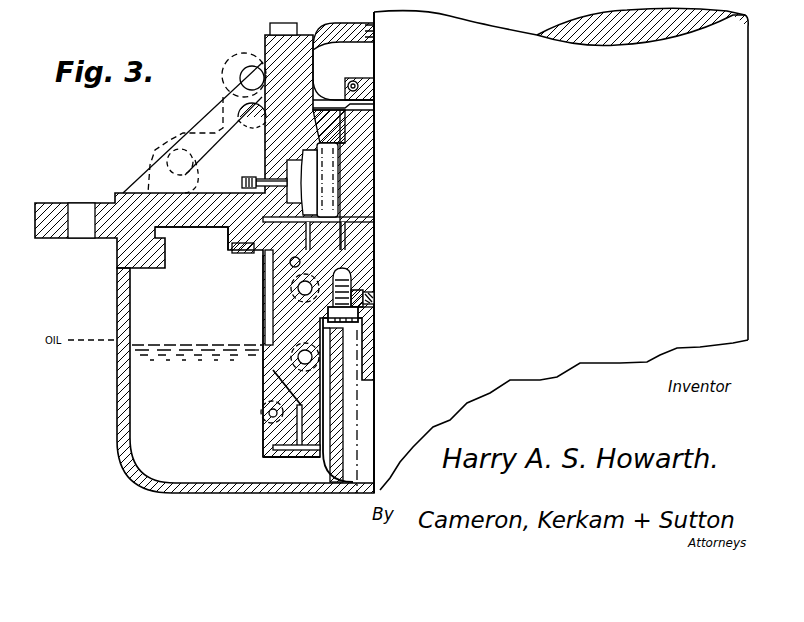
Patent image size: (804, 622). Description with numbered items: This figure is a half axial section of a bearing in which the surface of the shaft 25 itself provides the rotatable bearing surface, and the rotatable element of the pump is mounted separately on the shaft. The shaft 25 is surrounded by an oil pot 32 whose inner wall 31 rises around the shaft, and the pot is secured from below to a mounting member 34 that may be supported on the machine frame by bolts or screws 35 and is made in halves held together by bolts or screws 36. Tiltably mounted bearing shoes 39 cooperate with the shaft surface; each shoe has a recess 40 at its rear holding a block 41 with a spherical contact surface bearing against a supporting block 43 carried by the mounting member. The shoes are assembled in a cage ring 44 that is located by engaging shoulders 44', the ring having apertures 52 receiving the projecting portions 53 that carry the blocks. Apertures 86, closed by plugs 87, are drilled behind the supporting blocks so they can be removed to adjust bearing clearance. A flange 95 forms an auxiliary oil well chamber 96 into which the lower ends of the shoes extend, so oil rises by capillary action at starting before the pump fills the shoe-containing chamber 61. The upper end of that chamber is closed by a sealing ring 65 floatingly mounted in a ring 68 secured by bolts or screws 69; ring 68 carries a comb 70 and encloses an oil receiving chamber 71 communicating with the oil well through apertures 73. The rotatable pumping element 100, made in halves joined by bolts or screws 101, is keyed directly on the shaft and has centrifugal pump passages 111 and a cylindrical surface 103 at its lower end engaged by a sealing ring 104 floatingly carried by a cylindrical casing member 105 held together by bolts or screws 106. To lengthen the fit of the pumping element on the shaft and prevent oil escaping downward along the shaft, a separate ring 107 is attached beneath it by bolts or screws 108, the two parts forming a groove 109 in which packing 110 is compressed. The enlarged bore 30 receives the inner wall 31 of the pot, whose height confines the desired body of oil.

The shaft 25 is at (516, 46).
The bore of larger diameter 30 is at (345, 362).
The inner wall 31 is at (340, 455).
The oil pot 32 is at (147, 470).
The mounting member 34 is at (206, 230).
The bolts or screws 35 is at (86, 208).
The bolts or screws 36 is at (178, 130).
The bearing shoes 39 is at (357, 187).
The recess 40 is at (340, 168).
The block 41 is at (326, 205).
The supporting block 43 is at (292, 178).
The cage ring 44 is at (227, 246).
The shoulders 44' is at (247, 120).
The apertures 52 is at (335, 132).
The projecting portions 53 is at (340, 142).
The chamber 61 is at (348, 106).
The sealing ring 65 is at (362, 84).
The ring 68 is at (314, 40).
The bolts or screws 69 is at (278, 25).
The comb 70 is at (363, 28).
The oil receiving chamber 71 is at (355, 55).
The apertures 73 is at (243, 54).
The apertures 86 is at (262, 181).
The plugs 87 is at (255, 190).
The flange 95 is at (256, 258).
The chamber 96 is at (263, 346).
The rotatable pumping element 100 is at (345, 278).
The bolts or screws 101 is at (352, 333).
The cylindrical surface 103 is at (318, 415).
The sealing ring 104 is at (292, 463).
The cylindrical casing member 105 is at (285, 385).
The bolts or screws 106 is at (300, 280).
The ring 107 is at (362, 330).
The bolts or screws 108 is at (356, 295).
The groove 109 is at (362, 309).
The packing 110 is at (372, 298).
The centrifugal pump passages 111 is at (375, 394).